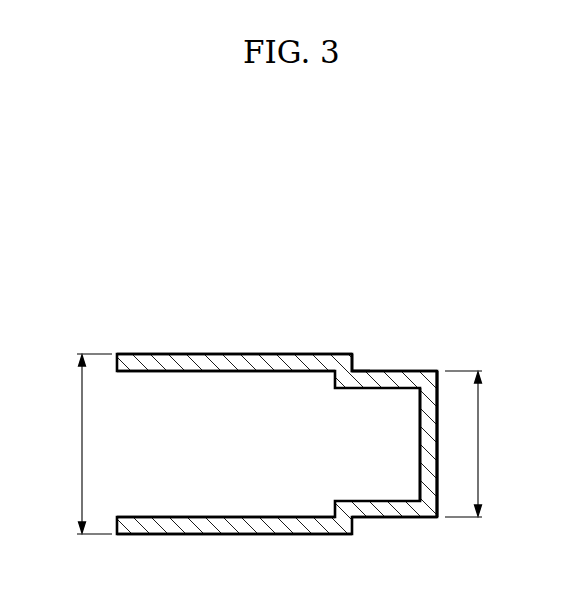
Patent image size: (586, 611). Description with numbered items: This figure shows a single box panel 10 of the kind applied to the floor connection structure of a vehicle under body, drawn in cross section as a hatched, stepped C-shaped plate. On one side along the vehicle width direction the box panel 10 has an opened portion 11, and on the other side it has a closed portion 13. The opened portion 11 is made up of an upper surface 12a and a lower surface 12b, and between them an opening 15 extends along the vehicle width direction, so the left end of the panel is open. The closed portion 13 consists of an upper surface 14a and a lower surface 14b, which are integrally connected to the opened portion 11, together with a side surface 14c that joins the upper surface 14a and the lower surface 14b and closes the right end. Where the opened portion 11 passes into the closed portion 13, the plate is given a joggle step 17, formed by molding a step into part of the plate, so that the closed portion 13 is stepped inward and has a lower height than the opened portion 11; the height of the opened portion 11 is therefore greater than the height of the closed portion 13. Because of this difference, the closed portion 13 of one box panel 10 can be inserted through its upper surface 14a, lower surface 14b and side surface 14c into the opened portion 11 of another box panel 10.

The box panel 10 is at (279, 203).
The opened portion 11 is at (207, 336).
The upper surface 12a is at (268, 354).
The lower surface 12b is at (233, 534).
The closed portion 13 is at (452, 487).
The upper surface 14a is at (397, 371).
The lower surface 14b is at (395, 517).
The side surface 14c is at (437, 410).
The opening 15 is at (108, 472).
The joggle step 17 is at (363, 355).